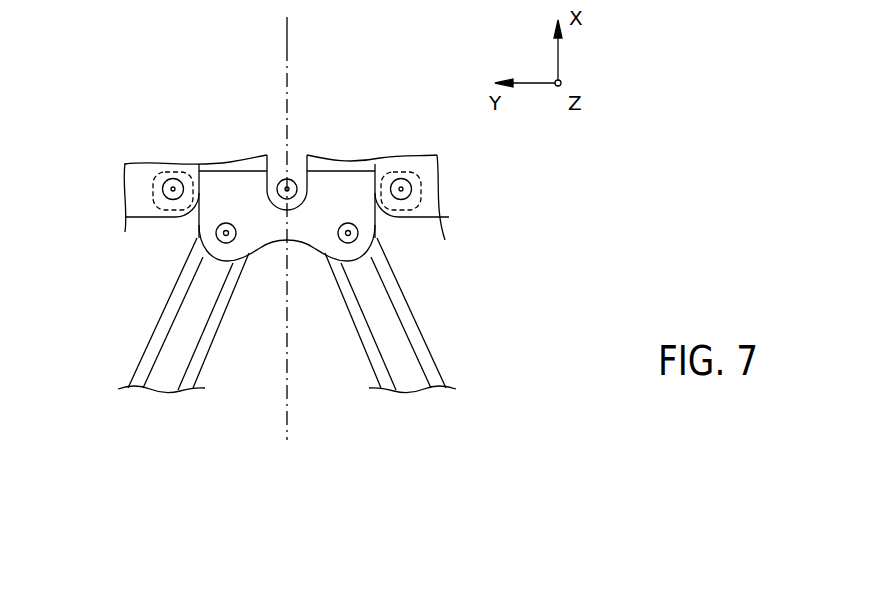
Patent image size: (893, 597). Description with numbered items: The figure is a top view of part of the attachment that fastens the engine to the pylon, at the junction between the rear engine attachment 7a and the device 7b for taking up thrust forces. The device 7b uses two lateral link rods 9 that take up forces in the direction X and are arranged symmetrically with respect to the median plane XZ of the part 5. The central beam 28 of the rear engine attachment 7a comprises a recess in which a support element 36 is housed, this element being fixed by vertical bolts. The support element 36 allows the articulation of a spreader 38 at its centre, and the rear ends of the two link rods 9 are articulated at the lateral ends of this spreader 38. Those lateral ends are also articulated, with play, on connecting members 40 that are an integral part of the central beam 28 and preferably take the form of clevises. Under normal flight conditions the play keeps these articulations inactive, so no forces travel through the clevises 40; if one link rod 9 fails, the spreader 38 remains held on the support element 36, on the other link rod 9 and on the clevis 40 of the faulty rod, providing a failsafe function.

The part 5 is at (288, 43).
The rear engine attachment 7a is at (145, 131).
The device for taking up thrust forces 7b is at (470, 330).
The lateral link rod 9 is at (155, 372).
The central beam 28 is at (359, 148).
The support element 36 is at (295, 163).
The spreader 38 is at (230, 187).
The connecting member 40 is at (130, 192).